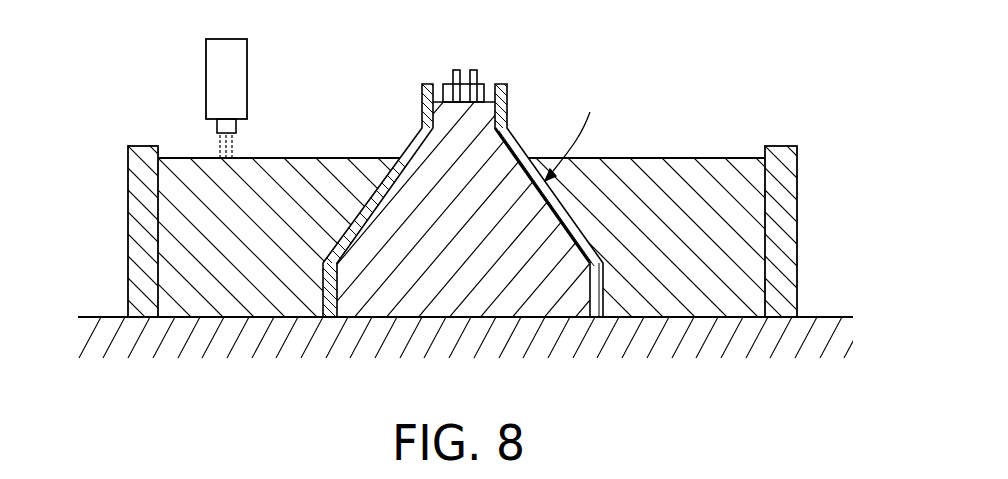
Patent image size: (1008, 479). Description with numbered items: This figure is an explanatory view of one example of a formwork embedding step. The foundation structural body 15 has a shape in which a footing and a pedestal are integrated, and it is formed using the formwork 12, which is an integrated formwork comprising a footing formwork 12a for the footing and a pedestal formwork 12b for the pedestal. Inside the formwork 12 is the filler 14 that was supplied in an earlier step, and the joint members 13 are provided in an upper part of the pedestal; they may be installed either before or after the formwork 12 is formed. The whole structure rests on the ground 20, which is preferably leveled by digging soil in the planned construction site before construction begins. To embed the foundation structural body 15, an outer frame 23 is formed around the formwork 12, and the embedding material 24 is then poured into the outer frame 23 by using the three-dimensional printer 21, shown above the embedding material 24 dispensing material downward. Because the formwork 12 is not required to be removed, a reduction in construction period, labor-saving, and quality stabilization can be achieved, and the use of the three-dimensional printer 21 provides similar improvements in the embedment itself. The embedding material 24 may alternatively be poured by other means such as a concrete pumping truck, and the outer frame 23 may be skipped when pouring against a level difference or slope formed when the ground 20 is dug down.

The formwork 12 is at (638, 195).
The footing formwork 12a is at (605, 280).
The pedestal formwork 12b is at (557, 208).
The joint members 13 is at (452, 77).
The filler 14 is at (407, 193).
The foundation structural body 15 is at (575, 132).
The ground 20 is at (812, 317).
The 3D printer 21 is at (220, 75).
The outer frame 23 is at (128, 178).
The embedding material 24 is at (255, 167).